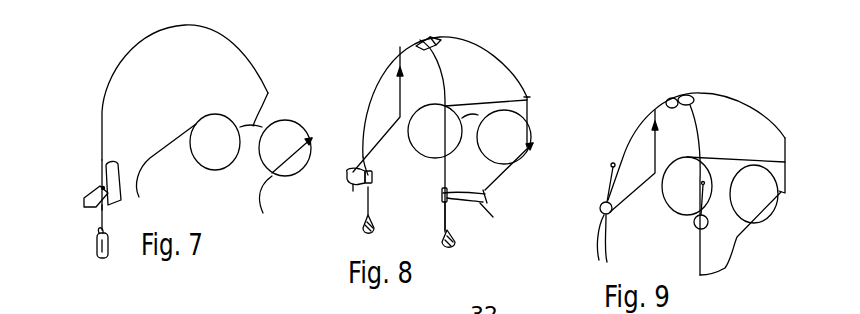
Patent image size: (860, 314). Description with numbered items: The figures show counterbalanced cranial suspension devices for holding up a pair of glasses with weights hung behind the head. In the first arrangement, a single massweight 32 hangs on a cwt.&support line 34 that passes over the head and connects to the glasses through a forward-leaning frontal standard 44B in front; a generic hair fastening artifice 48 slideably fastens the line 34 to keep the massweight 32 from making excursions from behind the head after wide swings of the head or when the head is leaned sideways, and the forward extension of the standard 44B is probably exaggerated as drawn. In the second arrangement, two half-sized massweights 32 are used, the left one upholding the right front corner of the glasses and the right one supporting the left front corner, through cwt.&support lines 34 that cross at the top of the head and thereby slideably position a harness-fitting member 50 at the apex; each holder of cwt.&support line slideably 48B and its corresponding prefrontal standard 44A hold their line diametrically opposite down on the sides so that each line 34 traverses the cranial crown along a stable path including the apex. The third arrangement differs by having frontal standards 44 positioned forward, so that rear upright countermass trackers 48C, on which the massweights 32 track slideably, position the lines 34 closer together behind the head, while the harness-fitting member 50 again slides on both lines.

In FIG. 7, the massweight 32 is at (84, 259).
In FIG. 8, the massweight 32 is at (437, 237).
In FIG. 9, the massweight 32 is at (694, 222).
In FIG. 7, the cwt.&support line 34 is at (249, 50).
In FIG. 8, the cwt.&support line 34 is at (448, 80).
In FIG. 9, the cwt.&support line 34 is at (748, 97).
In FIG. 9, the frontal standard 44 is at (790, 163).
In FIG. 8, the prefrontal standard 44A is at (532, 113).
In FIG. 7, the forward-leaning frontal standard 44B is at (263, 110).
In FIG. 7, the hair fastening artifice 48 is at (88, 196).
In FIG. 8, the hair fastening artifice 48 is at (359, 179).
In FIG. 8, the holder of cwt.&support line slideably 48B is at (470, 208).
In FIG. 9, the rear upright countermass tracker 48C is at (600, 181).
In FIG. 8, the harness-fitting member 50 is at (432, 37).
In FIG. 9, the harness-fitting member 50 is at (678, 105).